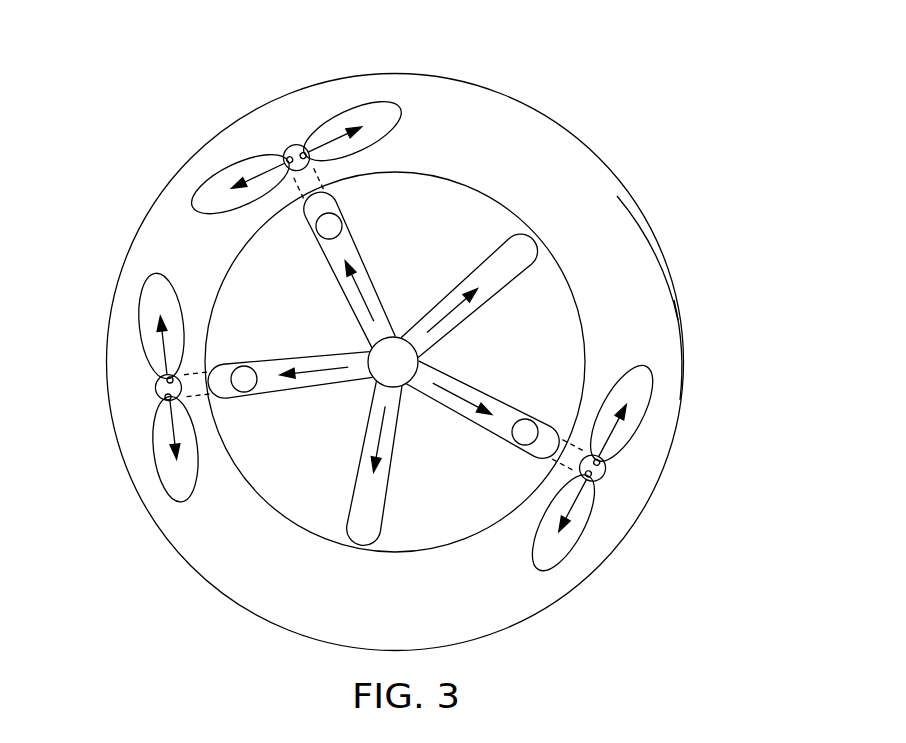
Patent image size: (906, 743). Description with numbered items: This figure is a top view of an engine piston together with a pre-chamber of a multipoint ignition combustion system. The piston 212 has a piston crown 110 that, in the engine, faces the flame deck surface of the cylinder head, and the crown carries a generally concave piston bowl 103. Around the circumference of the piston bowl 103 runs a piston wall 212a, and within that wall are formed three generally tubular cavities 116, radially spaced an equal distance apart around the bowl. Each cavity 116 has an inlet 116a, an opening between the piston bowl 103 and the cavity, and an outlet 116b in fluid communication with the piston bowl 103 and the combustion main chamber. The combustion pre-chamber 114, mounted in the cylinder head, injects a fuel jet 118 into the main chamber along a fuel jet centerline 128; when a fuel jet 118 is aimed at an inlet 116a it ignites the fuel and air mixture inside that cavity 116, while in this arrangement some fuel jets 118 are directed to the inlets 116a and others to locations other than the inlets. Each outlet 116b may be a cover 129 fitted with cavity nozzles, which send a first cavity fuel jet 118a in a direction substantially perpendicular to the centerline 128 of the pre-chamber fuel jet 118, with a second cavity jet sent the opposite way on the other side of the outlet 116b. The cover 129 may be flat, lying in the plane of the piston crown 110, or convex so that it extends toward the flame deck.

The piston bowl 103 is at (452, 177).
The piston crown 110 is at (540, 148).
The combustion pre-chamber 114 is at (393, 355).
The cavity 116 is at (316, 179).
The inlet 116a is at (260, 393).
The outlet 116b is at (157, 404).
The fuel jet 118 is at (280, 350).
The first cavity fuel jet 118a is at (135, 322).
The fuel jet centerline 128 is at (324, 394).
The cover 129 is at (165, 397).
The piston 212 is at (645, 227).
The piston wall 212a is at (677, 316).